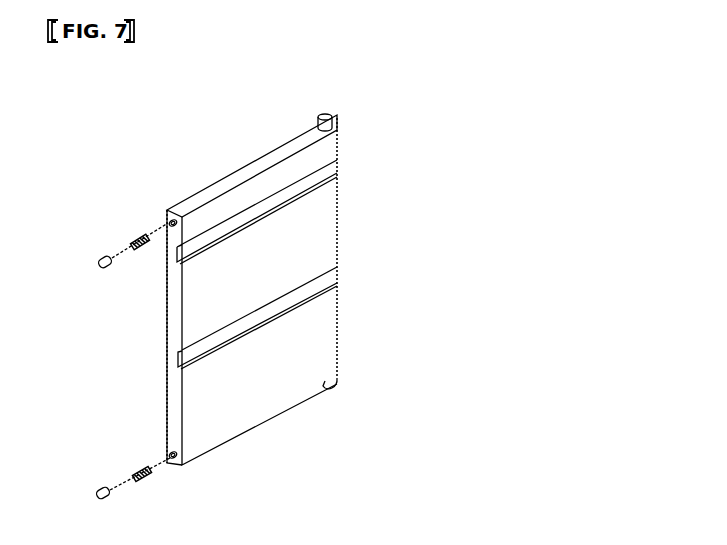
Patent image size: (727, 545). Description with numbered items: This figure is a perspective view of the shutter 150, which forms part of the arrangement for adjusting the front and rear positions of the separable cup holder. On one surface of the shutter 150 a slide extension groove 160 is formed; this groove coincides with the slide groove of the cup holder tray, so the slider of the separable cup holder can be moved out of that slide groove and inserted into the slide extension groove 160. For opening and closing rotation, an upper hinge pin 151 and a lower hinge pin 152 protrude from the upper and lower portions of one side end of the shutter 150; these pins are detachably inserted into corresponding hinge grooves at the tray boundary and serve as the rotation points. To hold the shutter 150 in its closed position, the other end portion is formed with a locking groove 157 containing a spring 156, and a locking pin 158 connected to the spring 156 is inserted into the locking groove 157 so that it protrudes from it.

The shutter 150 is at (232, 160).
The upper hinge pin 151 is at (325, 113).
The lower hinge pin 152 is at (334, 386).
The spring 156 is at (133, 239).
The locking groove 157 is at (168, 222).
The locking pin 158 is at (98, 260).
The slide extension groove 160 is at (337, 176).